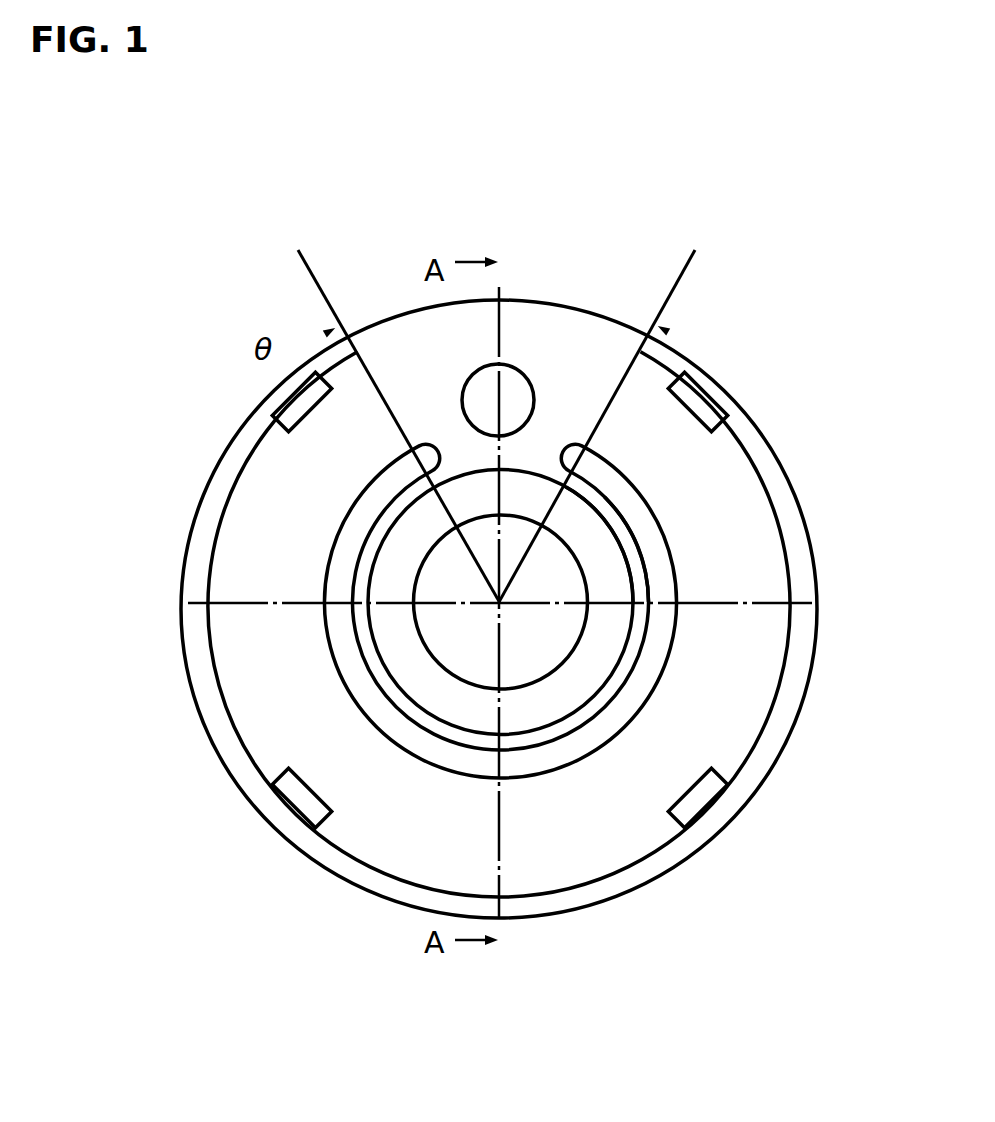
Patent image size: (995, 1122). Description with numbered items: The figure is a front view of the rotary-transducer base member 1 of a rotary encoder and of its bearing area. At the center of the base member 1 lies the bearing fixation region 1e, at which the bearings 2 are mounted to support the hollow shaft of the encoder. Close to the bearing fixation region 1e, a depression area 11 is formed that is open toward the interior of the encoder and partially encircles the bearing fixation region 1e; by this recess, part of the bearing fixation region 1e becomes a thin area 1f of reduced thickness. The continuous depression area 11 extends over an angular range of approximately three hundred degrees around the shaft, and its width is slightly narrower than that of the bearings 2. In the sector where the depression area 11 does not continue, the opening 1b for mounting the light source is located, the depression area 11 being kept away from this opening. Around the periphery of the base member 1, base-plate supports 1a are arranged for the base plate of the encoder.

The rotary-transducer base member 1 is at (305, 693).
The base-plate supports 1a is at (690, 397).
The opening 1b is at (508, 392).
The bearing fixation region 1e is at (615, 531).
The thin area 1f is at (643, 580).
The bearings 2 is at (407, 518).
The depression area 11 is at (347, 559).